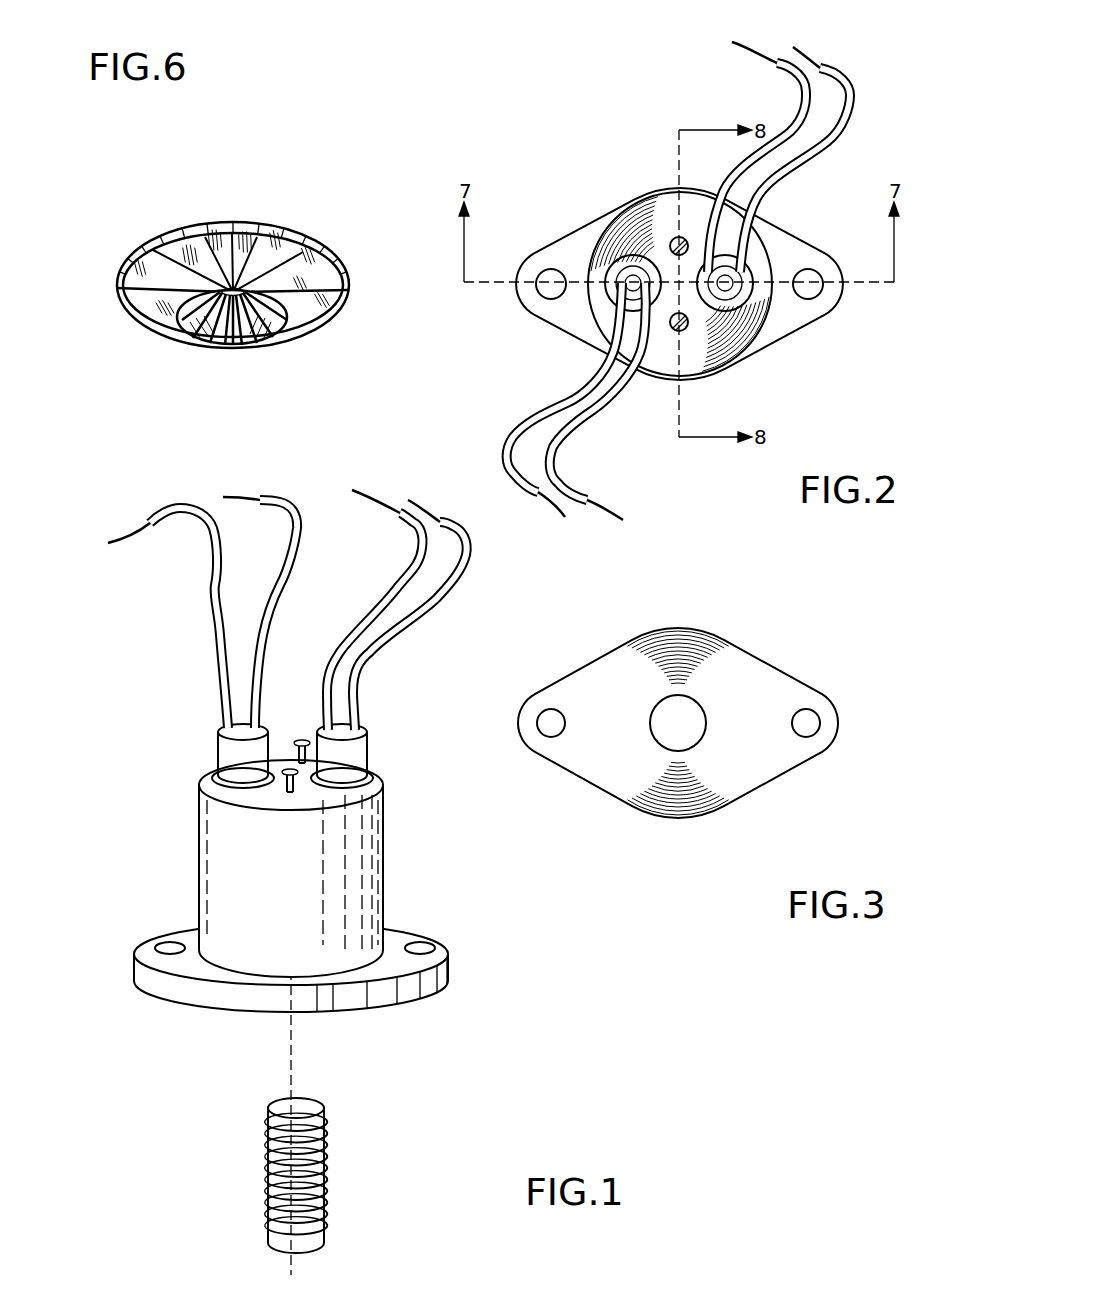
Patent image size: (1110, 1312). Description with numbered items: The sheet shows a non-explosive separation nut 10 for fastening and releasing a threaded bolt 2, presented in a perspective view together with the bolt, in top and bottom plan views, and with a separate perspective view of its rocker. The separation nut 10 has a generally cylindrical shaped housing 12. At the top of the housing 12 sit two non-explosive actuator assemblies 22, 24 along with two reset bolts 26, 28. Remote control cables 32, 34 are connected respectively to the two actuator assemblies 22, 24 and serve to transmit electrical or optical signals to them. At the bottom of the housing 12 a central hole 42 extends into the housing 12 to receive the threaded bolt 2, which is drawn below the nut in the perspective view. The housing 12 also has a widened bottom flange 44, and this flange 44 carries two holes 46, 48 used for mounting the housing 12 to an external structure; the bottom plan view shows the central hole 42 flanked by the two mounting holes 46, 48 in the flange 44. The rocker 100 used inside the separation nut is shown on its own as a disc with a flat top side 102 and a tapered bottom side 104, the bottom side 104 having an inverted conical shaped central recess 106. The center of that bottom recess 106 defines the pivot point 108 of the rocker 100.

In FIG. 1, the threaded bolt 2 is at (268, 1178).
In FIG. 2, the non-explosive separation nut 10 is at (572, 119).
In FIG. 3, the non-explosive separation nut 10 is at (700, 593).
In FIG. 1, the non-explosive separation nut 10 is at (158, 612).
In FIG. 2, the housing 12 is at (756, 347).
In FIG. 3, the housing 12 is at (680, 815).
In FIG. 1, the housing 12 is at (383, 868).
In FIG. 2, the non-explosive actuator assembly 22 is at (610, 265).
In FIG. 1, the non-explosive actuator assembly 22 is at (225, 753).
In FIG. 2, the non-explosive actuator assembly 24 is at (750, 305).
In FIG. 1, the non-explosive actuator assembly 24 is at (347, 762).
In FIG. 2, the reset bolt 26 is at (676, 331).
In FIG. 1, the reset bolt 26 is at (283, 777).
In FIG. 2, the reset bolt 28 is at (675, 238).
In FIG. 1, the reset bolt 28 is at (300, 740).
In FIG. 2, the remote control cable 32 is at (600, 413).
In FIG. 1, the remote control cable 32 is at (260, 642).
In FIG. 2, the remote control cable 34 is at (847, 112).
In FIG. 1, the remote control cable 34 is at (367, 670).
In FIG. 3, the central hole 42 is at (663, 723).
In FIG. 2, the bottom flange 44 is at (572, 320).
In FIG. 3, the bottom flange 44 is at (777, 687).
In FIG. 1, the bottom flange 44 is at (430, 993).
In FIG. 2, the hole 46 is at (533, 280).
In FIG. 3, the hole 46 is at (550, 717).
In FIG. 1, the hole 46 is at (170, 945).
In FIG. 2, the hole 48 is at (820, 291).
In FIG. 3, the hole 48 is at (812, 735).
In FIG. 1, the hole 48 is at (423, 947).
In FIG. 6, the rocker 100 is at (263, 177).
In FIG. 6, the flat top side 102 is at (240, 220).
In FIG. 6, the tapered bottom side 104 is at (317, 330).
In FIG. 6, the central recess 106 is at (193, 323).
In FIG. 6, the pivot point 108 is at (265, 347).